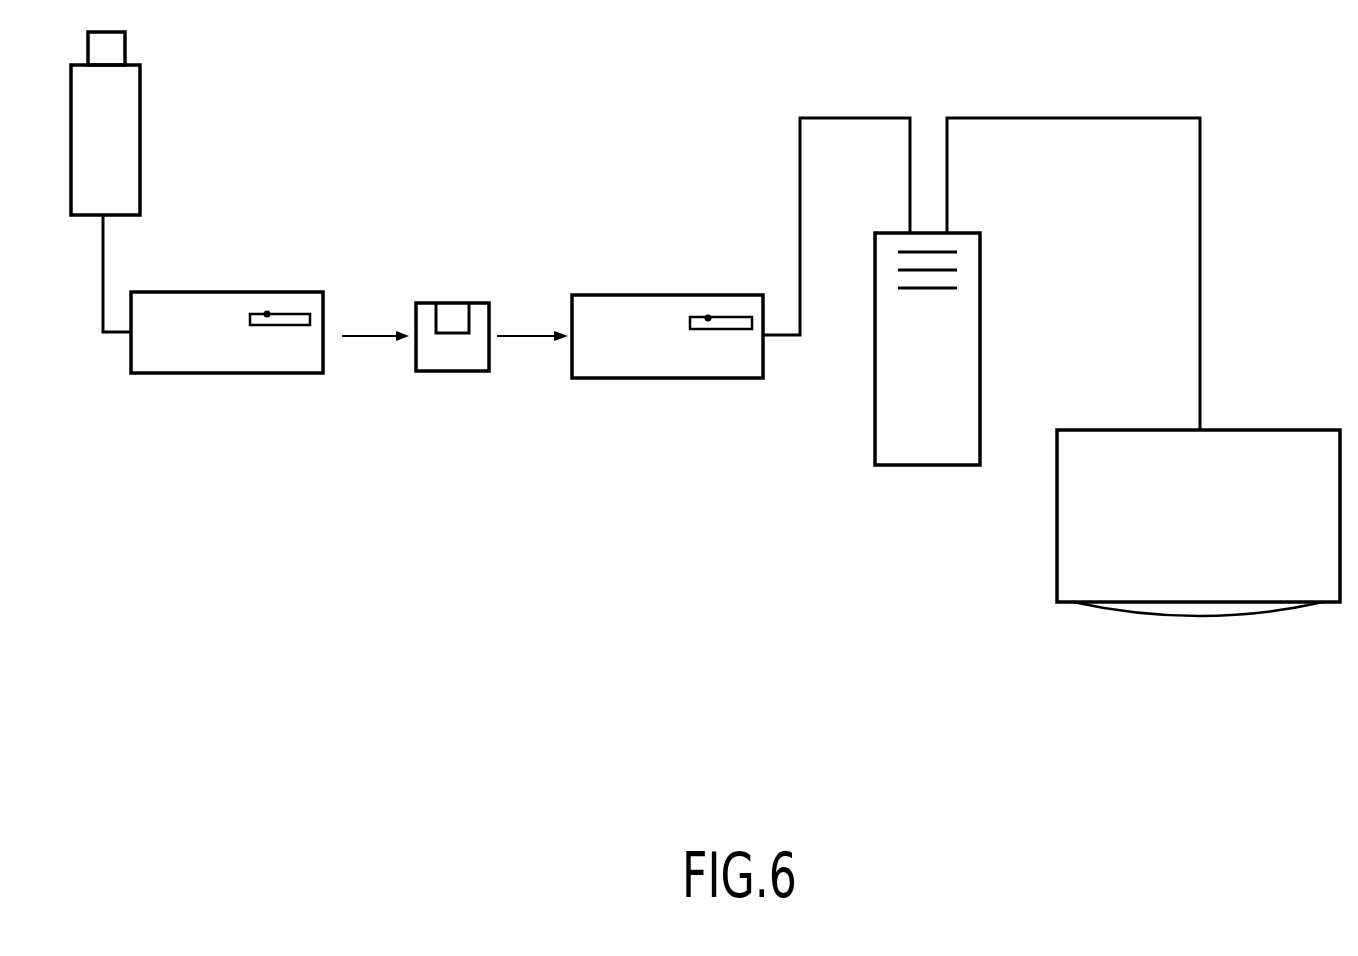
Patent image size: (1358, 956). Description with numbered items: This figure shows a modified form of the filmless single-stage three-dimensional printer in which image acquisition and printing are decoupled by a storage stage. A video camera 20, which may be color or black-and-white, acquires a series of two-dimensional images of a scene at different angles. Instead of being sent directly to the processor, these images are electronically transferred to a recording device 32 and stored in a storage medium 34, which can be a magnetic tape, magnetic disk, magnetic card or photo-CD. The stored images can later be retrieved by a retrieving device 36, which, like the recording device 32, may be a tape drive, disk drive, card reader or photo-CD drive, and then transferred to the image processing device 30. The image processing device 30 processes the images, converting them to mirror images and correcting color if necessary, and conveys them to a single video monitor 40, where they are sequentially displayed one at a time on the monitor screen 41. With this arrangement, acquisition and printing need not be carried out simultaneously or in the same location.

The video camera 20 is at (130, 102).
The image processing device 30 is at (968, 323).
The recording device 32 is at (310, 300).
The storage medium 34 is at (473, 360).
The retrieving device 36 is at (723, 363).
The video monitor 40 is at (1275, 442).
The monitor screen 41 is at (1153, 607).